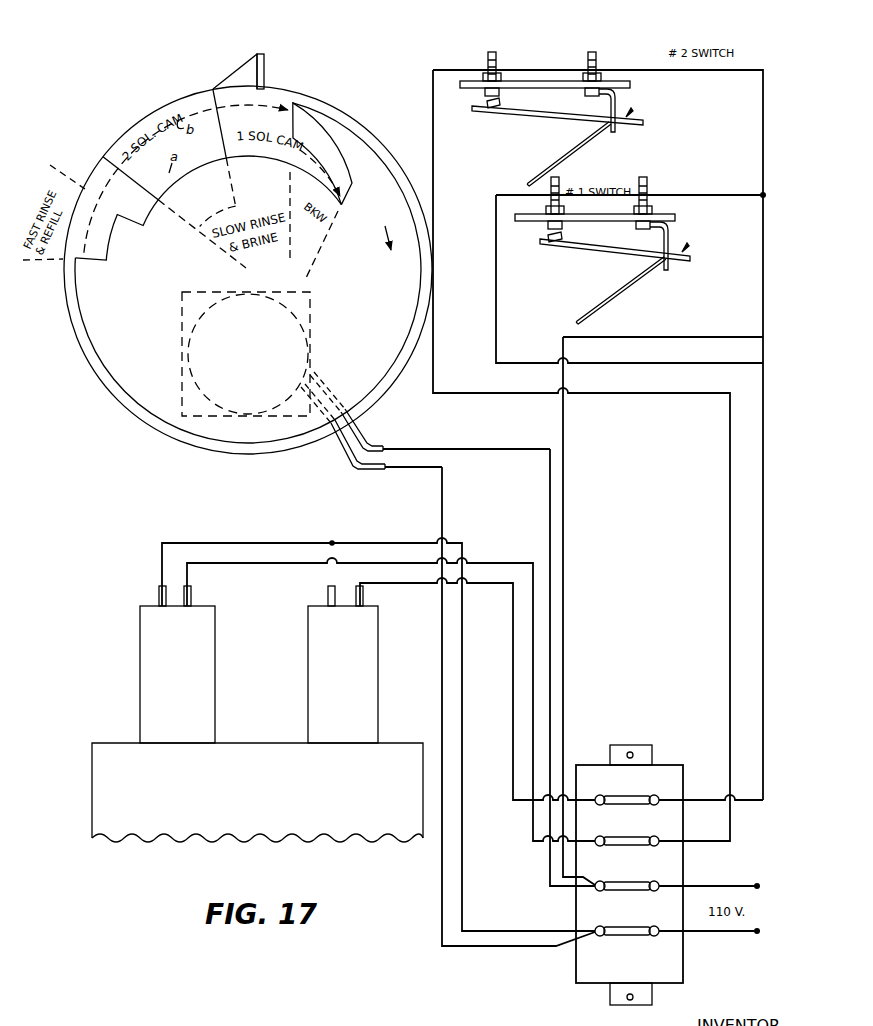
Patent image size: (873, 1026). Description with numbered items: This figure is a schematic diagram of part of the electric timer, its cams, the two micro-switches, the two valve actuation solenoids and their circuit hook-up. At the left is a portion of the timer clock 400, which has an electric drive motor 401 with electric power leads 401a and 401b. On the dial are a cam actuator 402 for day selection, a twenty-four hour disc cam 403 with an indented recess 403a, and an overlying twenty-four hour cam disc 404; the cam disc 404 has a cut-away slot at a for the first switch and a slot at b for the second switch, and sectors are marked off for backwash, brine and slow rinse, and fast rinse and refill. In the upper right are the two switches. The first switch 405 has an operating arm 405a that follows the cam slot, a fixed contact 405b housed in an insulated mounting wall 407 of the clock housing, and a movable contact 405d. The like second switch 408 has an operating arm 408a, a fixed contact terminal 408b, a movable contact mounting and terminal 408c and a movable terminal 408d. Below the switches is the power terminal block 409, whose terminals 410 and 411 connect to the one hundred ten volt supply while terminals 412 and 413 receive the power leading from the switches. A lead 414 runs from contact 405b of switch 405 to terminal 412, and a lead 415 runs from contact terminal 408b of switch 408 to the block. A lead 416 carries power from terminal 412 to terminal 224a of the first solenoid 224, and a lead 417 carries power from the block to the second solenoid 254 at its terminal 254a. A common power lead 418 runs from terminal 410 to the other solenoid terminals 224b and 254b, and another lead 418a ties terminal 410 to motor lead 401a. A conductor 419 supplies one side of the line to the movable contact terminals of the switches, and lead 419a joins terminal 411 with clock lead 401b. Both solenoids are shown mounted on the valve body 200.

The timer clock 400 is at (380, 143).
The electric drive motor 401 is at (312, 337).
The electric power lead 401a is at (344, 443).
The electric power lead 401b is at (367, 443).
The cam actuator 402 is at (264, 67).
The 24 hour disc cam 403 is at (123, 139).
The indented recess 403a is at (165, 112).
The 24 hour cam disc 404 is at (104, 326).
The No. 1 switch 405 is at (648, 190).
The operating arm 405a is at (598, 307).
The fixed contact 405b is at (562, 226).
The movable contact 405d is at (555, 244).
The insulated mounting wall 407 is at (630, 86).
The No. 2 switch 408 is at (582, 110).
The operating arm 408a is at (547, 171).
The fixed contact terminal 408b is at (500, 92).
The movable contact mounting and terminal 408c is at (594, 58).
The movable terminal 408d is at (491, 109).
The power terminal block 409 is at (667, 774).
The terminal 410 is at (625, 929).
The terminal 411 is at (627, 884).
The terminal 412 is at (627, 797).
The terminal 413 is at (627, 839).
The lead 414 is at (496, 250).
The lead 415 is at (434, 215).
The lead 416 is at (513, 637).
The lead 417 is at (236, 564).
The common power lead 418 is at (238, 543).
The power terminal lead 418a is at (407, 469).
The conductor 419 is at (564, 490).
The lead 419a is at (550, 490).
The valve body 200 is at (257, 792).
The No. 1 solenoid 224 is at (378, 680).
The terminal 224a is at (364, 596).
The terminal 224b is at (328, 592).
The No. 2 solenoid 254 is at (140, 673).
The terminal 254a is at (192, 592).
The terminal 254b is at (159, 594).